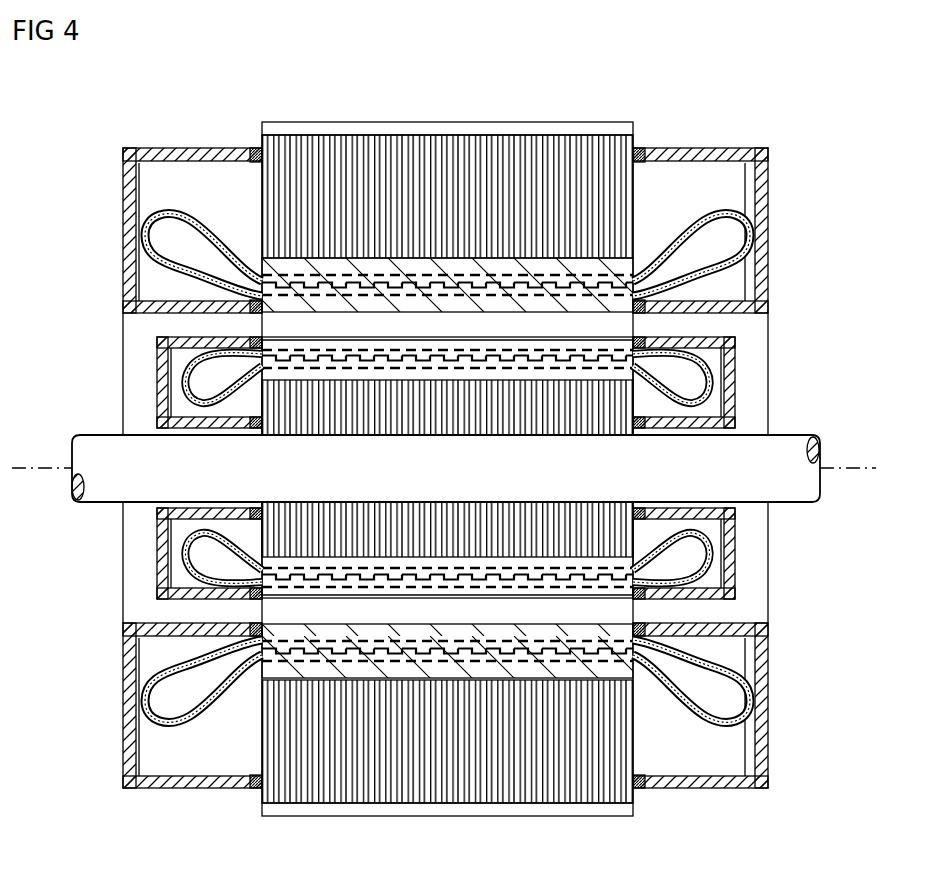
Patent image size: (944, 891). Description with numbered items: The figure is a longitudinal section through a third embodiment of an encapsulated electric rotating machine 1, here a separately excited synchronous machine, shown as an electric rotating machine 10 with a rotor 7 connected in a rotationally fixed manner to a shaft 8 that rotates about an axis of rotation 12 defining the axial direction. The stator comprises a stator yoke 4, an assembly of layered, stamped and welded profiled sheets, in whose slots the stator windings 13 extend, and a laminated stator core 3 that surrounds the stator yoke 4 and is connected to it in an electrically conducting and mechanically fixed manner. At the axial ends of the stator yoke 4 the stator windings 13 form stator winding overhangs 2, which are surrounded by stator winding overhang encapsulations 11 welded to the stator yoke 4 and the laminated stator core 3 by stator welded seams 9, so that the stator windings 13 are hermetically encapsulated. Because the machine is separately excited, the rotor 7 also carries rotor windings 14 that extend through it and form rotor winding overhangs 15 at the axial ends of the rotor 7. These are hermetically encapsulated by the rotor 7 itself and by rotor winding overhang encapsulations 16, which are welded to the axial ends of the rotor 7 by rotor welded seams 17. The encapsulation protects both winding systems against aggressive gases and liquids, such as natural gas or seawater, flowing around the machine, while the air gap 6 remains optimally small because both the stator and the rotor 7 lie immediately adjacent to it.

The encapsulated electric rotating machine 1 is at (428, 118).
The stator winding overhangs 2 is at (162, 272).
The laminated stator core 3 is at (268, 205).
The stator yoke 4 is at (490, 268).
The air gap 6 is at (156, 326).
The rotor 7 is at (276, 402).
The shaft 8 is at (786, 450).
The stator welded seams 9 is at (258, 148).
The electric rotating machine 10 is at (818, 176).
The stator winding overhang encapsulations 11 is at (178, 150).
The axis of rotation 12 is at (862, 472).
The stator windings 13 is at (608, 265).
The rotor windings 14 is at (540, 385).
The rotor winding overhangs 15 is at (185, 570).
The rotor winding overhang encapsulations 16 is at (735, 356).
The rotor welded seams 17 is at (258, 430).